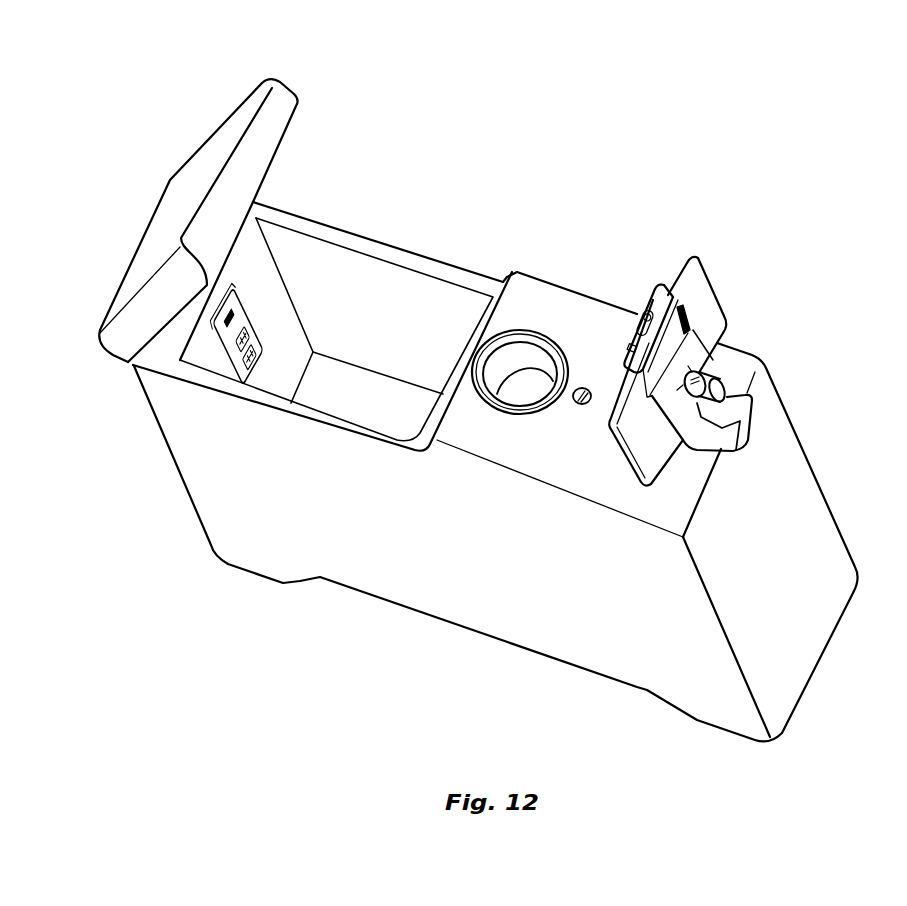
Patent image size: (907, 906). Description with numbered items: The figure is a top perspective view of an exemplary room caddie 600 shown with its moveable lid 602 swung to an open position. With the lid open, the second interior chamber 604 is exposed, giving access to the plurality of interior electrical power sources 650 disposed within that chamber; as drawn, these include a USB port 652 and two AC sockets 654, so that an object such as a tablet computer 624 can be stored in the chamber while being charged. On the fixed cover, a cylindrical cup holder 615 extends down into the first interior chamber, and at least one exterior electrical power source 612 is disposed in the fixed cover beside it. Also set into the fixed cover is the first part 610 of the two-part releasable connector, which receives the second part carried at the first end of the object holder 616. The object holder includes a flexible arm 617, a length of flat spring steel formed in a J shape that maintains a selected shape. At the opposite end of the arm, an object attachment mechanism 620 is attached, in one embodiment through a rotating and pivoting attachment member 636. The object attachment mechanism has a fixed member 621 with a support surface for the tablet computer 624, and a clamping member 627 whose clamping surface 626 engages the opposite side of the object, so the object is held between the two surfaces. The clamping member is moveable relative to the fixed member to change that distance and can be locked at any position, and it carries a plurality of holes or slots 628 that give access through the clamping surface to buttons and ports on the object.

The room caddie 600 is at (803, 131).
The moveable lid 602 is at (211, 147).
The second interior chamber 604 is at (384, 280).
The first part of the two-part releasable connector 610 is at (717, 391).
The exterior electrical power source 612 is at (583, 406).
The cylindrical cup holder 615 is at (520, 333).
The object holder 616 is at (750, 436).
The flexible arm 617 is at (746, 401).
The object attachment mechanism 620 is at (621, 292).
The fixed member 621 is at (673, 413).
The tablet computer 624 is at (700, 280).
The clamping surface 626 is at (653, 300).
The clamping member 627 is at (686, 312).
The holes or slots 628 is at (632, 348).
The rotating and pivoting attachment member 636 is at (727, 370).
The interior electrical power sources 650 is at (206, 325).
The USB port 652 is at (234, 318).
The AC sockets 654 is at (252, 356).